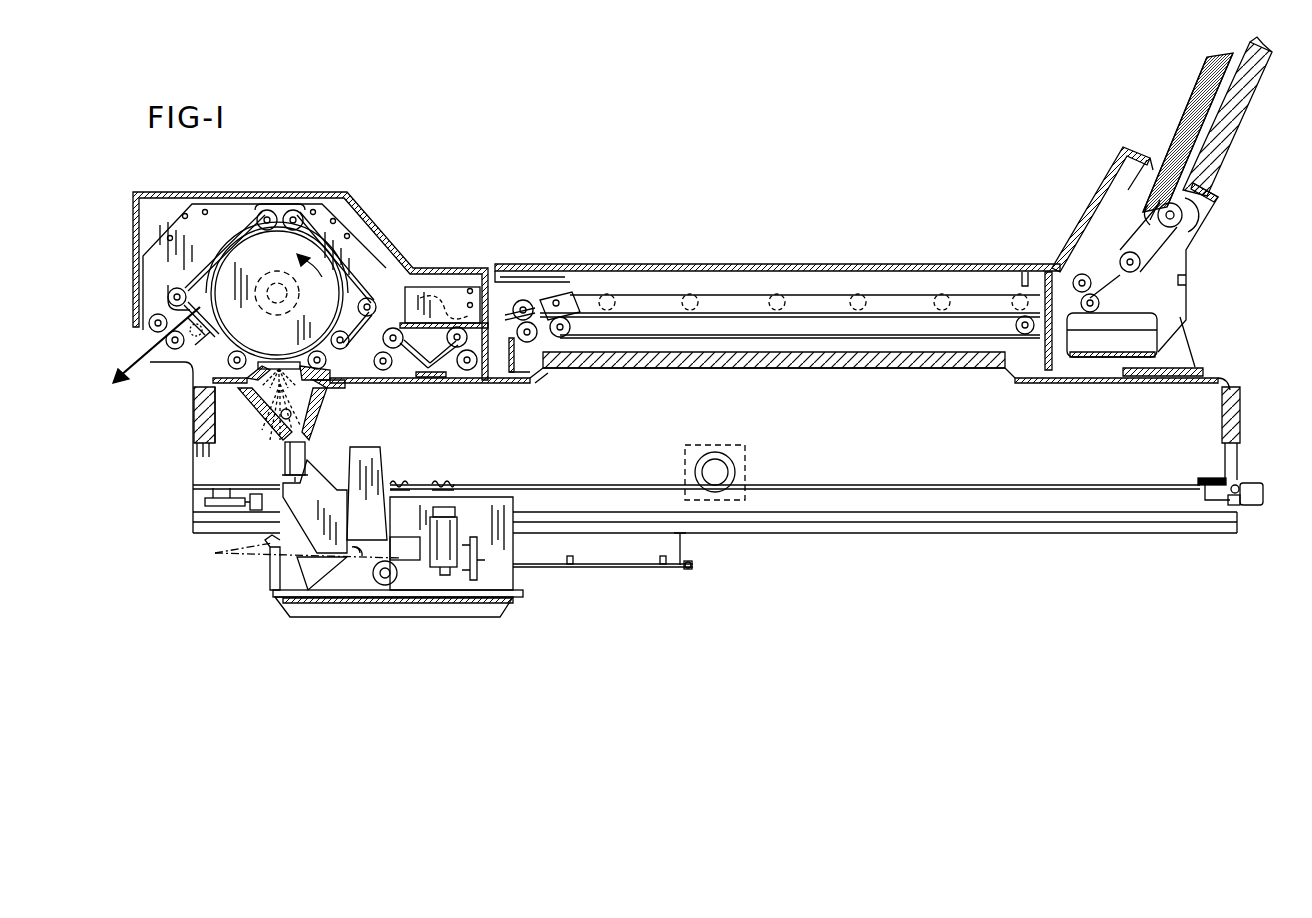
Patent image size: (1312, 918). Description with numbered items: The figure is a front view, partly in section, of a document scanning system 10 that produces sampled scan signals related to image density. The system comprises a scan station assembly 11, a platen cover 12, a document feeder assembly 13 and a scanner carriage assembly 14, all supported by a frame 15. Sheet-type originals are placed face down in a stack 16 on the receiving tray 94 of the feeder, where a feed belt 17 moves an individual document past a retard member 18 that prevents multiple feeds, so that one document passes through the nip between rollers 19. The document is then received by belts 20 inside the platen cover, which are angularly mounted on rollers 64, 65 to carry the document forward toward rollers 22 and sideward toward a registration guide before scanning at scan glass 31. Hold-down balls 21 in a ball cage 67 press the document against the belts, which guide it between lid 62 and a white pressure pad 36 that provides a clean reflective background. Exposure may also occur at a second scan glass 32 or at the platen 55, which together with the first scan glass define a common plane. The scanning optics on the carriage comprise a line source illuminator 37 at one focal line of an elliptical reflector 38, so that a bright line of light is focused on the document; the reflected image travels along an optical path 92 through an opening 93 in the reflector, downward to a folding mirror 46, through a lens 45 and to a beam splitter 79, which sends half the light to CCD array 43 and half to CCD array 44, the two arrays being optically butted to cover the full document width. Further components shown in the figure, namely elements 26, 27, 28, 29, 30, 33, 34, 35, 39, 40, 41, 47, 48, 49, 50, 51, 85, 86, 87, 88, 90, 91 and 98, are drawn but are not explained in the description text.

The document scanning system 10 is at (729, 195).
The scan station assembly 11 is at (412, 230).
The platen cover 12 is at (758, 256).
The document feeder assembly 13 is at (1114, 142).
The scanner carriage assembly 14 is at (292, 632).
The frame 15 is at (1232, 385).
The stack 16 is at (1193, 108).
The feed belt 17 is at (1195, 253).
The retard member 18 is at (1120, 230).
The rollers 19 is at (1078, 275).
The belts 20 is at (829, 336).
The hold-down balls 21 is at (700, 292).
The rollers 22 is at (538, 300).
The tension roller 26 is at (172, 288).
The belt 27 is at (368, 258).
The guide rollers 28 is at (300, 208).
The guide plate 29 is at (438, 375).
The roller 30 is at (326, 360).
The scan glass 31 is at (428, 370).
The scan glass 32 is at (295, 350).
The sheet path 33 is at (140, 340).
The drum surface belt 34 is at (222, 300).
The drum 35 is at (228, 292).
The pressure pad 36 is at (972, 371).
The line source illuminator 37 is at (268, 425).
The reflector 38 is at (194, 410).
The motor mount 39 is at (745, 472).
The hanger 40 is at (667, 567).
The rod 41 is at (568, 568).
The CCD array 43 is at (456, 497).
The CCD array 44 is at (482, 582).
The lens 45 is at (376, 586).
The folding mirror 46 is at (273, 563).
The base plate 47 is at (1108, 485).
The end clamp 48 is at (1206, 505).
The connector 49 is at (1245, 508).
The spring 50 is at (445, 482).
The spring 51 is at (400, 482).
The platen 55 is at (868, 370).
The lid 62 is at (605, 266).
The roller 64 is at (572, 318).
The roller 65 is at (1018, 313).
The ball cage 67 is at (641, 296).
The beam splitter 79 is at (440, 592).
The roller cartridge 85 is at (458, 290).
The roller 86 is at (472, 370).
The roller 87 is at (370, 312).
The roller 88 is at (386, 370).
The roller 90 is at (228, 360).
The guide plate 91 is at (328, 386).
The optical path 92 is at (240, 552).
The opening 93 is at (284, 450).
The receiving tray 94 is at (1230, 122).
The support bracket 98 is at (545, 381).